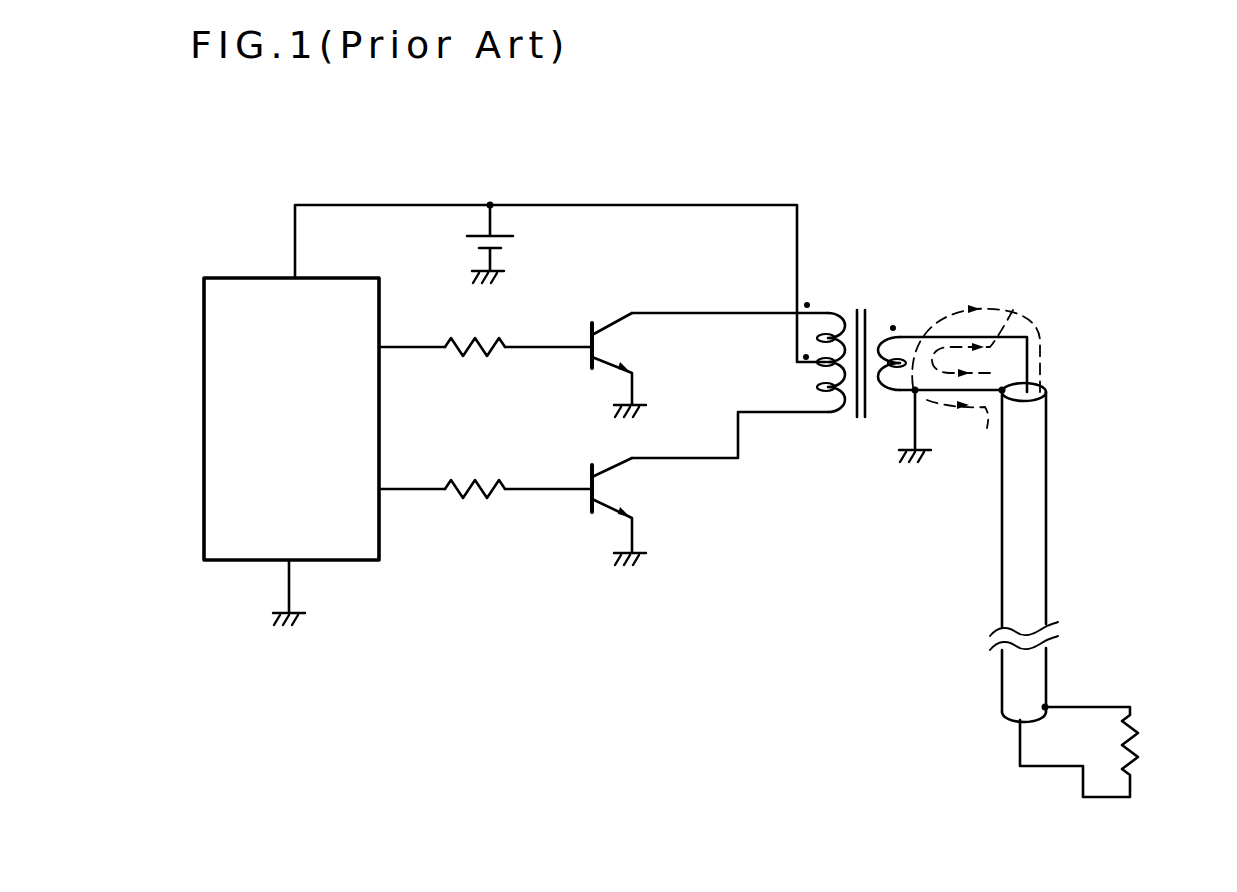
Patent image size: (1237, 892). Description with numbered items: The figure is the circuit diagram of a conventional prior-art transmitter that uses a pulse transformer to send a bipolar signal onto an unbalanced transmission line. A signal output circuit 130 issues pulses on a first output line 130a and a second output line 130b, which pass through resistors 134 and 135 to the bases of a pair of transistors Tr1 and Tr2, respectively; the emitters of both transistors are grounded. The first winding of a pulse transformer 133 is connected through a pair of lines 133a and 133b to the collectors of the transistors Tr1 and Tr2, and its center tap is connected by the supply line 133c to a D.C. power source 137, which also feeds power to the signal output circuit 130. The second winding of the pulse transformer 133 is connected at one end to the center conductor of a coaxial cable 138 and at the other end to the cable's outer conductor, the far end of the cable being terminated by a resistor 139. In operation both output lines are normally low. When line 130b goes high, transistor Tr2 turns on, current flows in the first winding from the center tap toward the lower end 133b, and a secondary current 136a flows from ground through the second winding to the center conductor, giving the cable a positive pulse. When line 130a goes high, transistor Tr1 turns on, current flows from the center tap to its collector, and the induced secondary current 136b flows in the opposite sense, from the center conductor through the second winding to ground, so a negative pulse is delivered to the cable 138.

The signal output circuit 130 is at (237, 278).
The first output line 130a is at (396, 347).
The second output line 130b is at (398, 489).
The pulse transformer 133 is at (862, 308).
The first winding line 133a is at (693, 313).
The second winding line 133b is at (776, 413).
The center tap power line 133c is at (742, 204).
The resistor 134 is at (478, 358).
The resistor 135 is at (466, 500).
The first transistor Tr1 is at (584, 360).
The second transistor Tr2 is at (584, 498).
The current 136a is at (966, 284).
The magnetic flux 136b is at (1013, 310).
The D.C. power source 137 is at (512, 246).
The coaxial cable 138 is at (1036, 540).
The terminating resistor 139 is at (1138, 752).